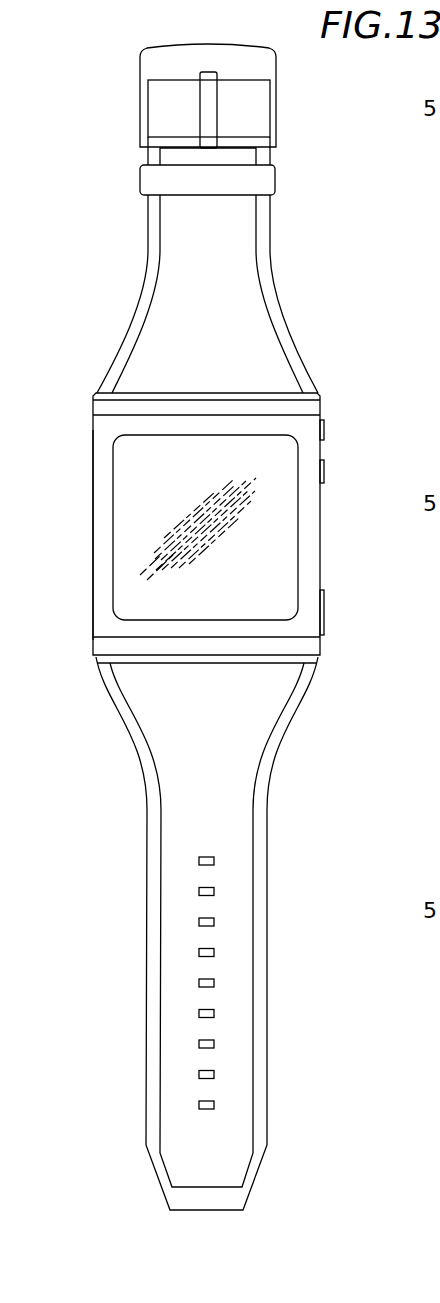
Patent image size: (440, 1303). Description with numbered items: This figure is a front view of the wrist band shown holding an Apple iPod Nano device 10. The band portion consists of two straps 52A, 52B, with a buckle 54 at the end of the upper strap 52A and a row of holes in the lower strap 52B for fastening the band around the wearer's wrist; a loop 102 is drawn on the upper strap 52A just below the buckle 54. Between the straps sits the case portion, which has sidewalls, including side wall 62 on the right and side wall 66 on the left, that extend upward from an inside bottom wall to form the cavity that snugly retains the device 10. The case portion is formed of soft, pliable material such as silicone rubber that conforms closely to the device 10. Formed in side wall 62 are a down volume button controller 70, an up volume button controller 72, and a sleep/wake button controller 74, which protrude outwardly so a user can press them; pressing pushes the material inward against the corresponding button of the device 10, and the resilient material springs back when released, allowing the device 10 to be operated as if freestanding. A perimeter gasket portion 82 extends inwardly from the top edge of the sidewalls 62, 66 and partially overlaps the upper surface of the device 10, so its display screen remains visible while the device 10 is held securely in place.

The Apple iPod Nano device 10 is at (268, 510).
The strap 52A is at (242, 262).
The strap 52B is at (237, 872).
The buckle 54 is at (257, 67).
The side wall 62 is at (320, 498).
The side wall 66 is at (93, 535).
The down volume button controller 70 is at (323, 417).
The up volume button controller 72 is at (323, 458).
The sleep/wake button controller 74 is at (323, 612).
The perimeter gasket portion 82 is at (308, 545).
The strap loop 102 is at (257, 178).